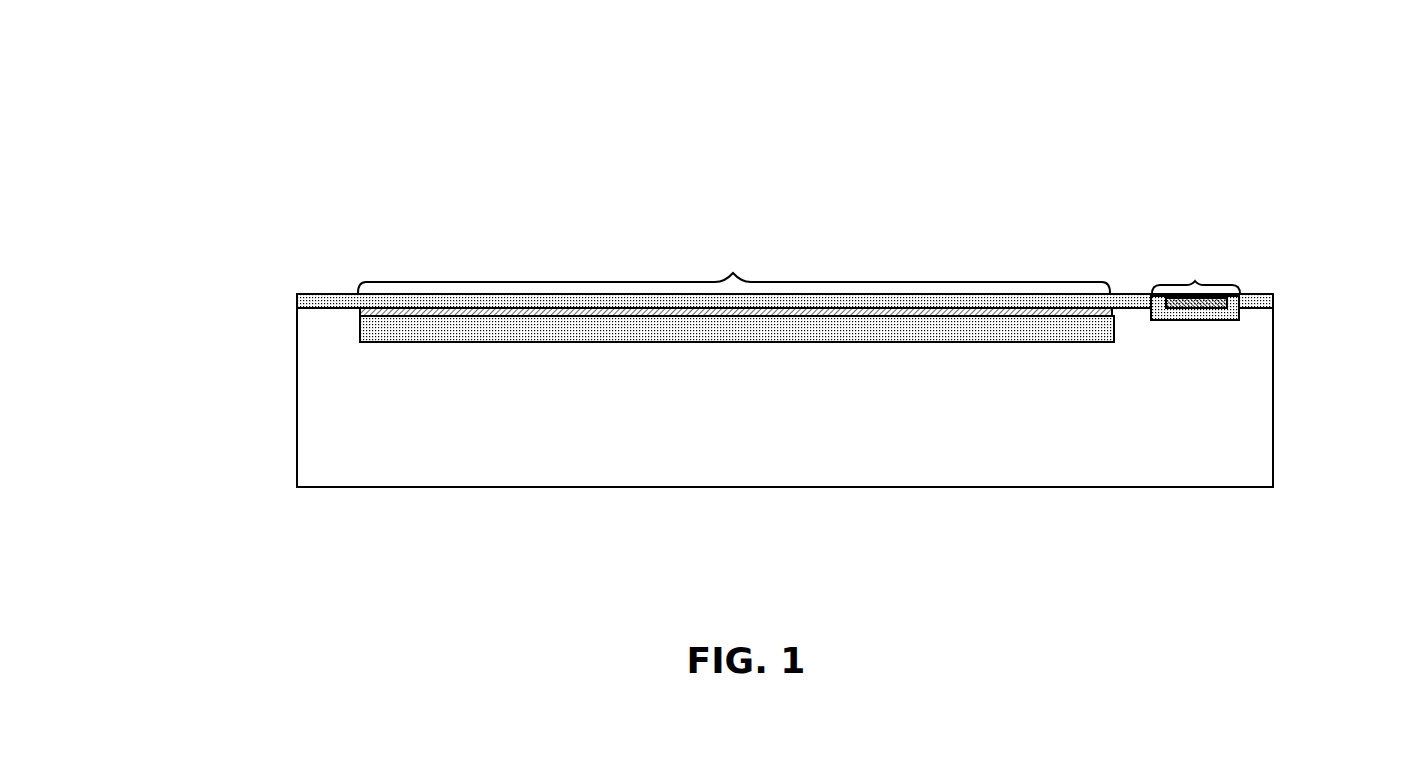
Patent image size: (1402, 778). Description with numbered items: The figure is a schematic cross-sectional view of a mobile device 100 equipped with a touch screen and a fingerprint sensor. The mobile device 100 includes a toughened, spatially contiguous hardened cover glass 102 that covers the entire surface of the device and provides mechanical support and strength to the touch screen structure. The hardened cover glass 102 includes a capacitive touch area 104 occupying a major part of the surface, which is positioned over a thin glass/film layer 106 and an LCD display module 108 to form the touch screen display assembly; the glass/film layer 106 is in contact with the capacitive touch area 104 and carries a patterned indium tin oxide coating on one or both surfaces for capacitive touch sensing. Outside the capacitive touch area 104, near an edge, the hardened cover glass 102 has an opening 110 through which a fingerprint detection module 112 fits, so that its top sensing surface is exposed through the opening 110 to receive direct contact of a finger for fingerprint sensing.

The mobile device 100 is at (297, 418).
The hardened cover glass 102 is at (1132, 294).
The capacitive touch area 104 is at (734, 259).
The thin glass/film layer 106 is at (698, 312).
The LCD display module 108 is at (1037, 382).
The opening 110 is at (1158, 321).
The fingerprint detection module 112 is at (1232, 227).